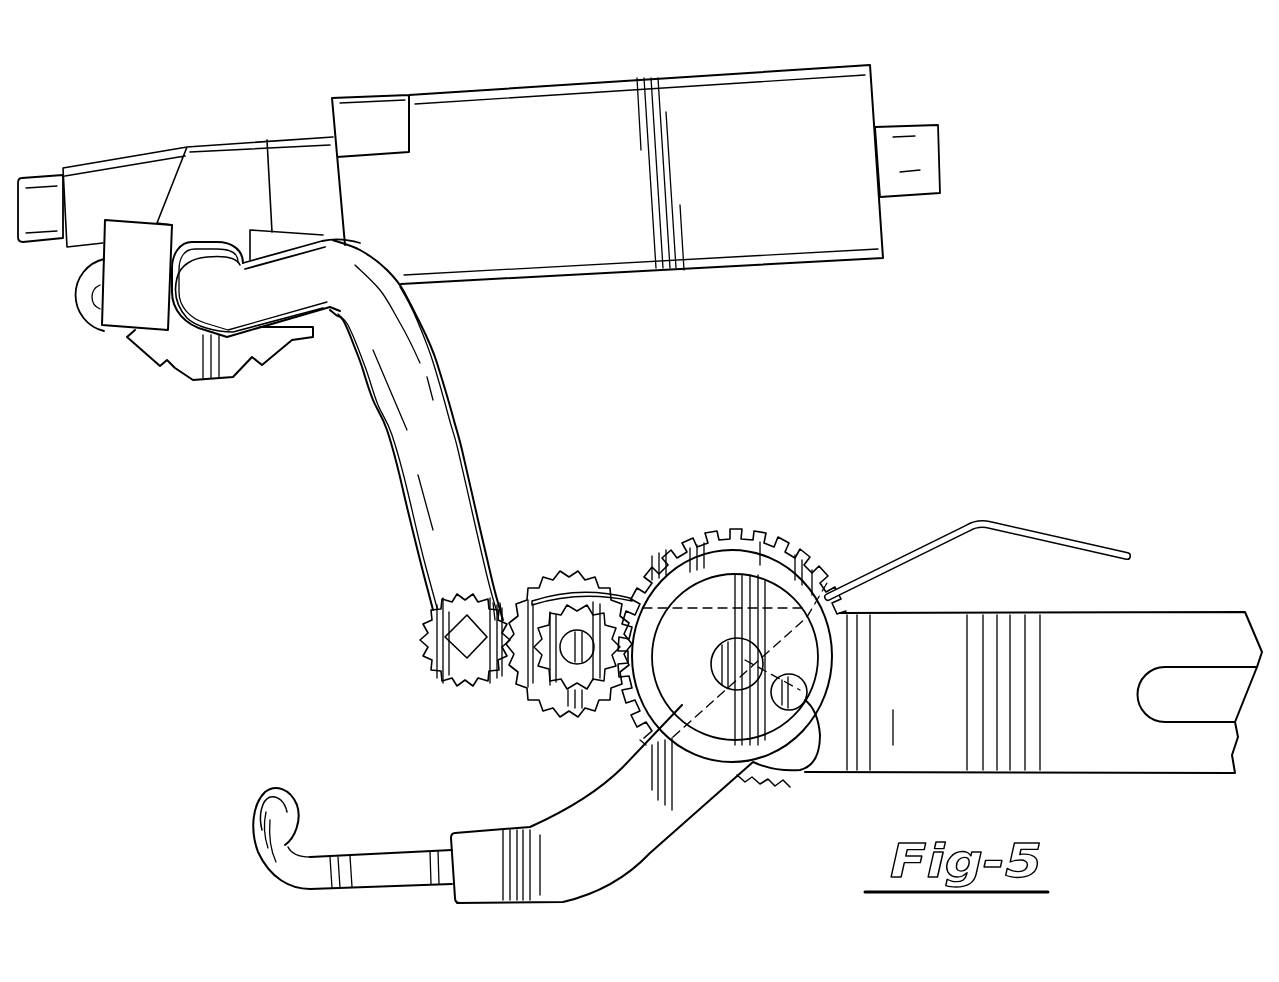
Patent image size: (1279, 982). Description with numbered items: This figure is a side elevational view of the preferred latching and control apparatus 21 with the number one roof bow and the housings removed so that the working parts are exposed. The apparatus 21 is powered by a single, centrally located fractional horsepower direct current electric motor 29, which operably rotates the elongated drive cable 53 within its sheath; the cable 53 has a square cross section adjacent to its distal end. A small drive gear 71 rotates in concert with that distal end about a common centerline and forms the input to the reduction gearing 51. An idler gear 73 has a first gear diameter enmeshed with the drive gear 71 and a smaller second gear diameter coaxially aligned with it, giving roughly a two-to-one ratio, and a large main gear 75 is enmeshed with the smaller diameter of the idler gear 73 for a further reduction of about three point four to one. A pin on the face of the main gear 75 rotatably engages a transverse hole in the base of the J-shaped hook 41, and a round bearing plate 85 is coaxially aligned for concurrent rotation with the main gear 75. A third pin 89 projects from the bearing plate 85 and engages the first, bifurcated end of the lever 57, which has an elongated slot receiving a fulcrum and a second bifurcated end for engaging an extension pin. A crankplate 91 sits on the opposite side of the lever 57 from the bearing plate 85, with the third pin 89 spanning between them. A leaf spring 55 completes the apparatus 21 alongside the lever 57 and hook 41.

The latching and control apparatus 21 is at (1008, 408).
The electric motor 29 is at (468, 118).
The hook 41 is at (577, 880).
The reduction gearing 51 is at (732, 494).
The drive cable 53 is at (438, 612).
The leaf spring 55 is at (1072, 532).
The lever 57 is at (1180, 623).
The drive gear 71 is at (463, 677).
The idler gear 73 is at (568, 573).
The main gear 75 is at (793, 540).
The bearing plate 85 is at (673, 557).
The third pin 89 is at (750, 757).
The crankplate 91 is at (640, 740).